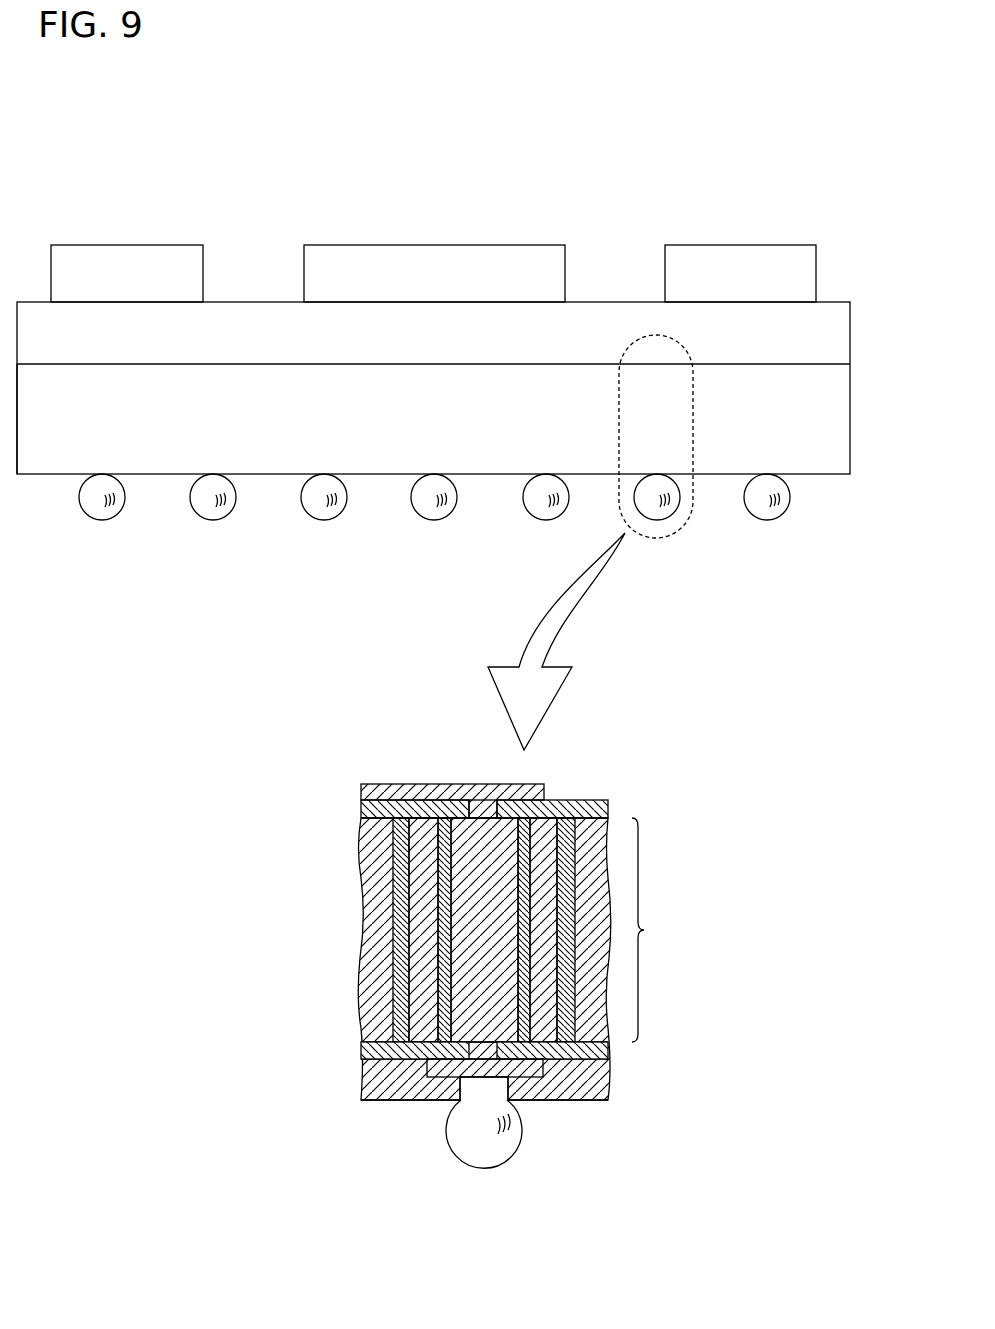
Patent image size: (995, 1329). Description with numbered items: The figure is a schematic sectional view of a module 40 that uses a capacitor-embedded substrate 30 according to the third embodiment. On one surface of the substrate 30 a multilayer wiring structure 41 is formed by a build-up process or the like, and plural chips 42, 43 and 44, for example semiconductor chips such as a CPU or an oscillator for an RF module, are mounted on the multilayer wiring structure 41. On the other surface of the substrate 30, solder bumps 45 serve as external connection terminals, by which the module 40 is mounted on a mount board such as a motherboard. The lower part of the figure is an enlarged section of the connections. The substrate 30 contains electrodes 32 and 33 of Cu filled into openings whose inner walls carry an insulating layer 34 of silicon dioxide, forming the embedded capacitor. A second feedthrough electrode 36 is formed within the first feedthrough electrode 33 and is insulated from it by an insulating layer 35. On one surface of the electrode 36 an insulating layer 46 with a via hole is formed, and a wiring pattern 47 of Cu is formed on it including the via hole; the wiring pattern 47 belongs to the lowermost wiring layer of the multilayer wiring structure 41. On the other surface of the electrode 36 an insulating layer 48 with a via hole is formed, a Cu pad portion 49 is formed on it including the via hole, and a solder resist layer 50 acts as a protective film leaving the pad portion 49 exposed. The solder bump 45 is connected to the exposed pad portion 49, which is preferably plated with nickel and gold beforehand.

The capacitor-embedded substrate 30 is at (834, 414).
The electrode 32 is at (377, 993).
The first feedthrough electrode 33 is at (422, 877).
The insulating layer 34 is at (403, 935).
The insulating layer 35 is at (523, 837).
The second feedthrough electrode 36 is at (462, 836).
The module 40 is at (565, 150).
The multilayer wiring structure 41 is at (834, 327).
The chip 42 is at (124, 248).
The chip 43 is at (425, 248).
The chip 44 is at (740, 248).
The solder bump 45 is at (774, 499).
The insulating layer 46 is at (575, 806).
The wiring pattern 47 is at (373, 790).
The insulating layer 48 is at (361, 1050).
The pad portion 49 is at (527, 1070).
The solder resist layer 50 is at (378, 1099).